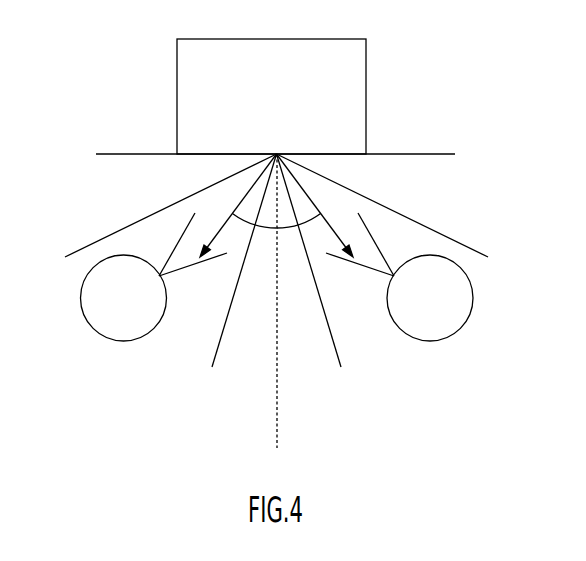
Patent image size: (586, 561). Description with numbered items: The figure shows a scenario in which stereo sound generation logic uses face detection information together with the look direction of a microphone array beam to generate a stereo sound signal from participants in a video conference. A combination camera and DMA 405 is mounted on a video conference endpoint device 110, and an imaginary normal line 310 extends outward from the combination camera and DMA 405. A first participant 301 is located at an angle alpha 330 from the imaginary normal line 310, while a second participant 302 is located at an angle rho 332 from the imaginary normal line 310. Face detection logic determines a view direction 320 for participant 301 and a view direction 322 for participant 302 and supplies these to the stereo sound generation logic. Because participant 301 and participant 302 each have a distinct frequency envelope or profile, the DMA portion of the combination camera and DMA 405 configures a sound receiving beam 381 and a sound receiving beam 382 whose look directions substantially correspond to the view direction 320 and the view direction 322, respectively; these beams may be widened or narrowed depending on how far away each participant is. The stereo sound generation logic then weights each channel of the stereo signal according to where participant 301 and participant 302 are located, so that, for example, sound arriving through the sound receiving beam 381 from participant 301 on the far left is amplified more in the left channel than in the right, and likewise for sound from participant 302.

The combination camera and DMA 405 is at (303, 39).
The video conference endpoint device 110 is at (400, 154).
The imaginary normal line 310 is at (278, 388).
The view direction 320 is at (248, 192).
The view direction 322 is at (303, 190).
The angle α 330 is at (263, 229).
The angle ρ 332 is at (312, 229).
The sound receiving beam 381 is at (123, 228).
The sound receiving beam 382 is at (420, 223).
The participant 301 is at (83, 322).
The participant 302 is at (455, 335).